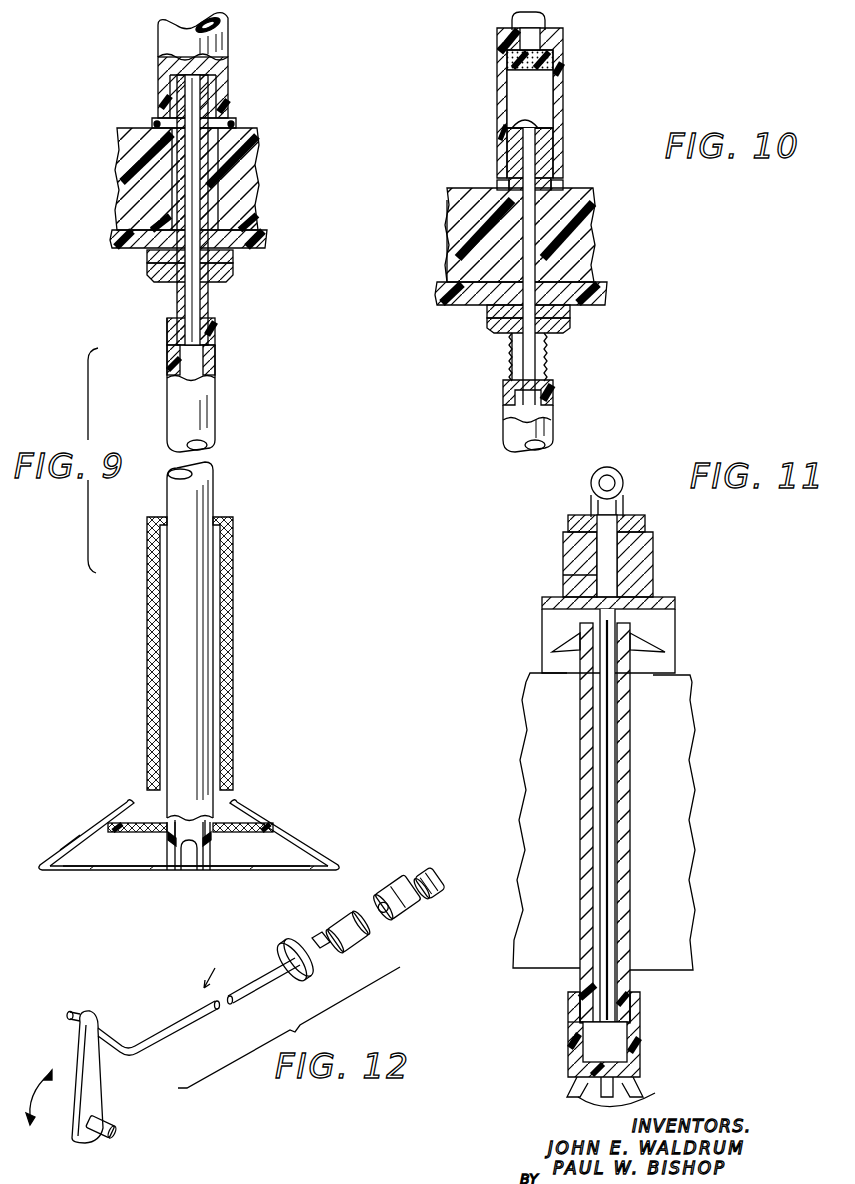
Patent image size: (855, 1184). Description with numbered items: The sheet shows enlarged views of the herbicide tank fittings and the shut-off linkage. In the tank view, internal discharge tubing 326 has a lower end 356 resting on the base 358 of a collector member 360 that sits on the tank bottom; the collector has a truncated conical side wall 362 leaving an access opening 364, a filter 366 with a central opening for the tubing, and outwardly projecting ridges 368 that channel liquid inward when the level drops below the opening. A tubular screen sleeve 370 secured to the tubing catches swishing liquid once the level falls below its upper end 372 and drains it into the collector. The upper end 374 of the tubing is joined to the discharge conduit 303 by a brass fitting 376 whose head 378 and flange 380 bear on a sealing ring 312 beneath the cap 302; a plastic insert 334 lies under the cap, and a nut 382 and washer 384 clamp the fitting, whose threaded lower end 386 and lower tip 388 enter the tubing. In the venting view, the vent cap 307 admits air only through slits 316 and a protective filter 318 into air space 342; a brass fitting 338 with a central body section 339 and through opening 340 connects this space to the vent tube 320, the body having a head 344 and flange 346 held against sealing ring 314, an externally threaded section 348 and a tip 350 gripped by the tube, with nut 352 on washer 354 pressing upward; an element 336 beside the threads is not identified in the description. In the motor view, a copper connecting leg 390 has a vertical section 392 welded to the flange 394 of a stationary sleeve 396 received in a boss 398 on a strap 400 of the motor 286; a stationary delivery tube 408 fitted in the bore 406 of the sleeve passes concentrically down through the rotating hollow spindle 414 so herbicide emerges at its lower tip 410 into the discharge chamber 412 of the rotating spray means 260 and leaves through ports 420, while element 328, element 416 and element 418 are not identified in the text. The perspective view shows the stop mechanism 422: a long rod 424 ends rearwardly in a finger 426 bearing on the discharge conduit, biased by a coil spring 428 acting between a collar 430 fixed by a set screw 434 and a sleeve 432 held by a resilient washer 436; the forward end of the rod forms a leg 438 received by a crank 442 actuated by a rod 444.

In FIG. 9, the discharge conduit 303 is at (226, 42).
In FIG. 9, the head 378 is at (213, 85).
In FIG. 9, the flange 380 is at (228, 118).
In FIG. 9, the sealing ring 312 is at (234, 124).
In FIG. 9, the bottle cap 302 is at (258, 145).
In FIG. 10, the bottle cap 302 is at (594, 232).
In FIG. 9, the brass fitting 376 is at (198, 190).
In FIG. 9, the plastic washer 334 is at (255, 246).
In FIG. 10, the plastic washer 334 is at (600, 292).
In FIG. 9, the washer 384 is at (230, 256).
In FIG. 9, the nut 382 is at (232, 272).
In FIG. 9, the upper end 374 is at (168, 333).
In FIG. 9, the lower end 386 is at (205, 300).
In FIG. 9, the lower tip 388 is at (212, 330).
In FIG. 9, the internal discharge tubing 326 is at (200, 403).
In FIG. 9, the upper end 372 is at (213, 520).
In FIG. 9, the tubular screen sleeve 370 is at (232, 610).
In FIG. 9, the access opening 364 is at (150, 805).
In FIG. 9, the filter 366 is at (230, 820).
In FIG. 9, the ridges 368 is at (110, 815).
In FIG. 9, the conical side wall 362 is at (66, 848).
In FIG. 9, the collector member 360 is at (72, 872).
In FIG. 9, the base 358 is at (125, 872).
In FIG. 9, the lower end 356 is at (205, 872).
In FIG. 10, the slits 316 is at (512, 21).
In FIG. 10, the protective filter 318 is at (507, 62).
In FIG. 10, the air space 342 is at (548, 85).
In FIG. 10, the vent cap 307 is at (562, 98).
In FIG. 10, the through opening 340 is at (520, 124).
In FIG. 10, the head 344 is at (545, 145).
In FIG. 10, the flange 346 is at (498, 184).
In FIG. 10, the sealing ring 314 is at (558, 182).
In FIG. 10, the brass fitting 338 is at (540, 205).
In FIG. 10, the central body section 339 is at (470, 240).
In FIG. 10, the washer 354 is at (570, 312).
In FIG. 10, the nut 352 is at (568, 326).
In FIG. 10, the externally threaded section 348 is at (510, 360).
In FIG. 10, the threads 336 is at (548, 360).
In FIG. 10, the tip 350 is at (510, 388).
In FIG. 10, the vent tube 320 is at (548, 420).
In FIG. 11, the copper connecting leg 390 is at (612, 466).
In FIG. 11, the vertical section 392 is at (623, 505).
In FIG. 11, the flange 394 is at (645, 522).
In FIG. 11, the bore 406 is at (600, 557).
In FIG. 11, the boss 398 is at (653, 565).
In FIG. 11, the stationary sleeve 396 is at (575, 590).
In FIG. 11, the strap 400 is at (655, 604).
In FIG. 11, the stationary delivery tube 408 is at (600, 622).
In FIG. 11, the cone washer 418 is at (650, 640).
In FIG. 11, the rotating hollow spindle 414 is at (630, 720).
In FIG. 11, the motor 286 is at (680, 762).
In FIG. 11, the fitting 328 is at (584, 1030).
In FIG. 11, the seal 416 is at (622, 1005).
In FIG. 11, the lower tip 410 is at (640, 1045).
In FIG. 11, the rotating spray means 260 is at (572, 1037).
In FIG. 11, the discharge chamber 412 is at (592, 1055).
In FIG. 11, the ports 420 is at (640, 1099).
In FIG. 12, the resilient washer 436 is at (398, 880).
In FIG. 12, the finger 426 is at (432, 864).
In FIG. 12, the spring 428 is at (317, 936).
In FIG. 12, the set screw 434 is at (293, 950).
In FIG. 12, the sleeve 432 is at (355, 942).
In FIG. 12, the stop mechanism 422 is at (215, 968).
In FIG. 12, the collar 430 is at (340, 962).
In FIG. 12, the leg 438 is at (96, 1032).
In FIG. 12, the long rod 424 is at (190, 1024).
In FIG. 12, the crank 442 is at (92, 1071).
In FIG. 12, the rod 444 is at (112, 1125).